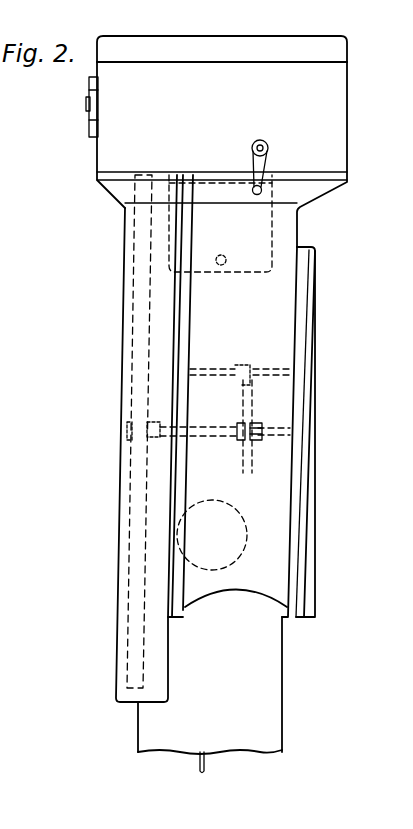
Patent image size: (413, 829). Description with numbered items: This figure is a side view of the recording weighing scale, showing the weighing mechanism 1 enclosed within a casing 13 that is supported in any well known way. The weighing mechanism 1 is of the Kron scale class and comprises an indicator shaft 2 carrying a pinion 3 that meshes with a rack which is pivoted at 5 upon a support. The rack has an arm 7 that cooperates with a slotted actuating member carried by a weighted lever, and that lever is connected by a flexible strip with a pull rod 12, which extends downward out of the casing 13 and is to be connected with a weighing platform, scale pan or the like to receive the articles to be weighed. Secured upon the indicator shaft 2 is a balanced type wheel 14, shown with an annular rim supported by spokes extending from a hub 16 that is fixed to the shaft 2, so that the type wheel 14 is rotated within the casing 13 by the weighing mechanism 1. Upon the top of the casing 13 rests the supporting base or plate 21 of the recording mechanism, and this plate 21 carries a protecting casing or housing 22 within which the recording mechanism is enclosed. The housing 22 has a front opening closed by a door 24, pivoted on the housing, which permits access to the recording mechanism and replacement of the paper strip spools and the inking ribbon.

The weighing mechanism 1 is at (122, 510).
The indicator shaft 2 is at (203, 437).
The pinion 3 is at (257, 437).
The pivot of rack 5 is at (213, 370).
The arm 7 is at (252, 467).
The pull rod 12 is at (198, 768).
The casing 13 is at (285, 656).
The type wheel 14 is at (135, 350).
The hub 16 is at (157, 443).
The supporting base or plate 21 is at (347, 186).
The protecting casing or housing 22 is at (222, 88).
The door 24 is at (92, 112).